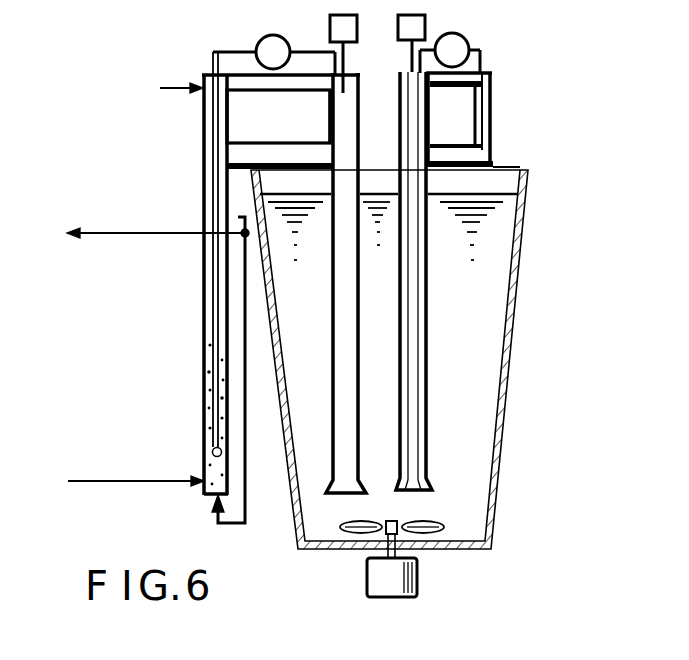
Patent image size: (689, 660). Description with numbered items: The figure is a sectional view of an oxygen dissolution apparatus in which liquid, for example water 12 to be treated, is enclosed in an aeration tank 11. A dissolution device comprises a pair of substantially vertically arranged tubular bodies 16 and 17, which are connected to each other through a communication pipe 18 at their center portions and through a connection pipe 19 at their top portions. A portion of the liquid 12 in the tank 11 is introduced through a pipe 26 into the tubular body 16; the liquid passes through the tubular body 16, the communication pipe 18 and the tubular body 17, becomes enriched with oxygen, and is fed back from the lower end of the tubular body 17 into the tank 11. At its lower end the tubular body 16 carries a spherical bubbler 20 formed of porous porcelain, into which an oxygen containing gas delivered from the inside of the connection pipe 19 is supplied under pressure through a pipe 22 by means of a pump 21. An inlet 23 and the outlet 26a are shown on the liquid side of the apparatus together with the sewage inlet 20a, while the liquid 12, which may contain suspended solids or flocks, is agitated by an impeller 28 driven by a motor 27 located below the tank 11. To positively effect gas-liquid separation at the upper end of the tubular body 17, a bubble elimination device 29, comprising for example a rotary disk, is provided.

The aeration tank 11 is at (509, 319).
The water 12 is at (498, 266).
The tubular body 16 is at (204, 138).
The tubular body 17 is at (406, 144).
The communication pipe 18 is at (316, 131).
The connection pipe 19 is at (270, 85).
The spherical bubbler 20 is at (204, 457).
The sewage inlet 20a is at (185, 483).
The pump 21 is at (293, 35).
The pipe 22 is at (213, 174).
The inlet 23 is at (192, 88).
The pipe 26 is at (247, 505).
The purified water outlet 26a is at (185, 234).
The motor 27 is at (416, 586).
The impeller 28 is at (398, 510).
The bubble elimination device 29 is at (347, 93).